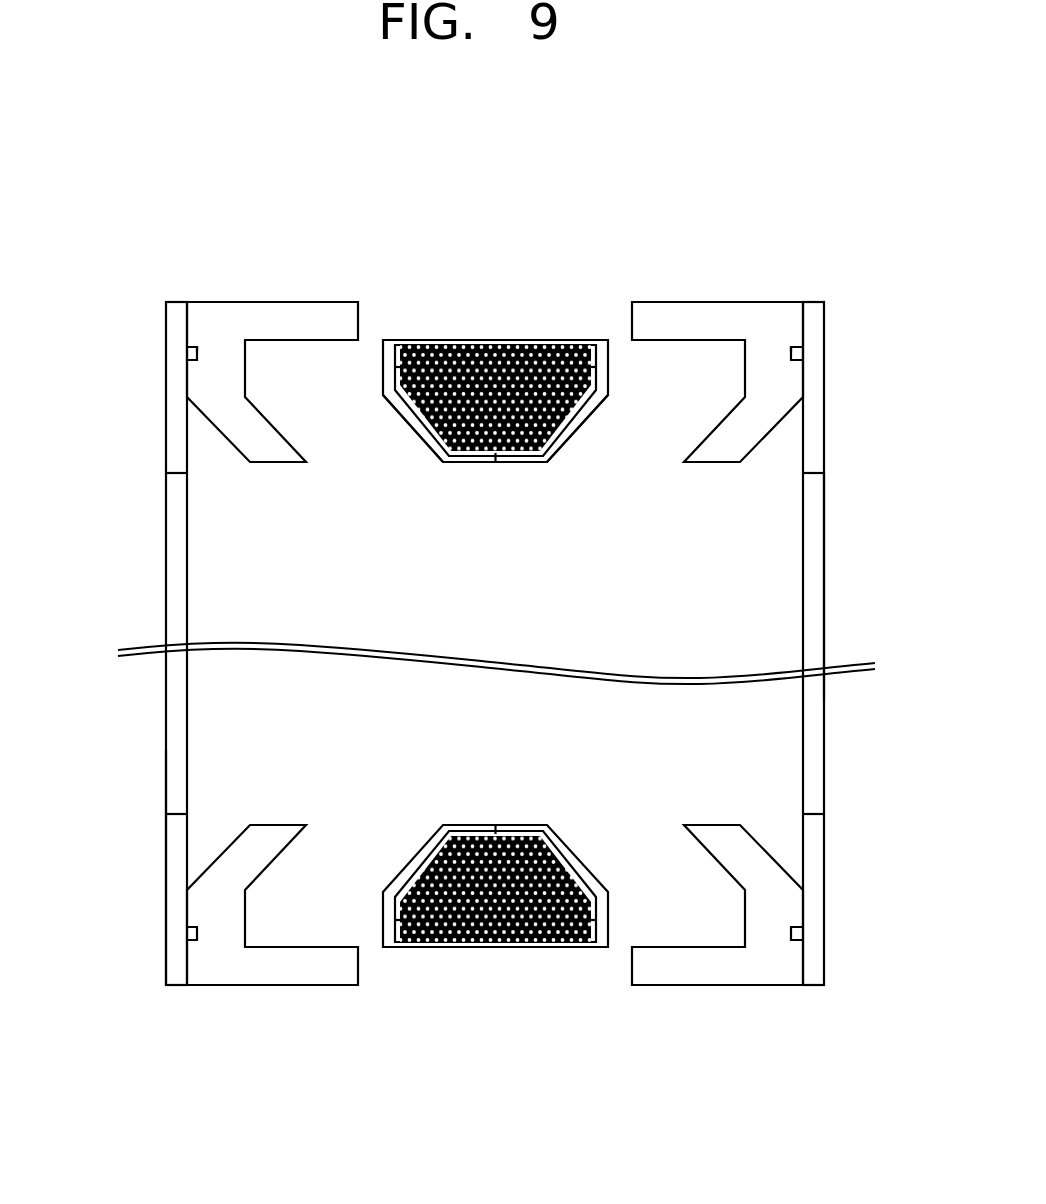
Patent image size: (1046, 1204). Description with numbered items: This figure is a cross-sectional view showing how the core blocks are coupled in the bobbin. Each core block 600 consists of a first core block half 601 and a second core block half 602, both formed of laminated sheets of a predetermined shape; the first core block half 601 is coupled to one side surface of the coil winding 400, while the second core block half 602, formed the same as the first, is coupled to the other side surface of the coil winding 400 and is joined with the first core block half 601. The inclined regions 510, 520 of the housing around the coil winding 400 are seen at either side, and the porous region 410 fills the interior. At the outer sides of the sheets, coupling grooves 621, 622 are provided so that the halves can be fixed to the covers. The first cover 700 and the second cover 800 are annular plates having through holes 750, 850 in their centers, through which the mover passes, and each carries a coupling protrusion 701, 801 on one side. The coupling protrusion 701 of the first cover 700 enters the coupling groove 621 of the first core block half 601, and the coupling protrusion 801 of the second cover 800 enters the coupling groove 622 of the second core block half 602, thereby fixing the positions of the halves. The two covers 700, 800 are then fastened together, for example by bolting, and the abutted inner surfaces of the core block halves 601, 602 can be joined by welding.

The core block 600 is at (280, 215).
The first core block half 601 is at (320, 302).
The second core block half 602 is at (670, 302).
The porous member 410 is at (522, 340).
The coil winding 400 is at (512, 950).
The first inclined portion 510 is at (420, 437).
The second inclined portion 520 is at (575, 437).
The coupling groove 621 is at (198, 348).
The coupling groove 622 is at (791, 346).
The first cover 700 is at (166, 333).
The coupling protrusion 701 is at (192, 356).
The through hole 750 is at (183, 487).
The second cover 800 is at (828, 550).
The coupling protrusion 801 is at (797, 357).
The through hole 850 is at (813, 487).